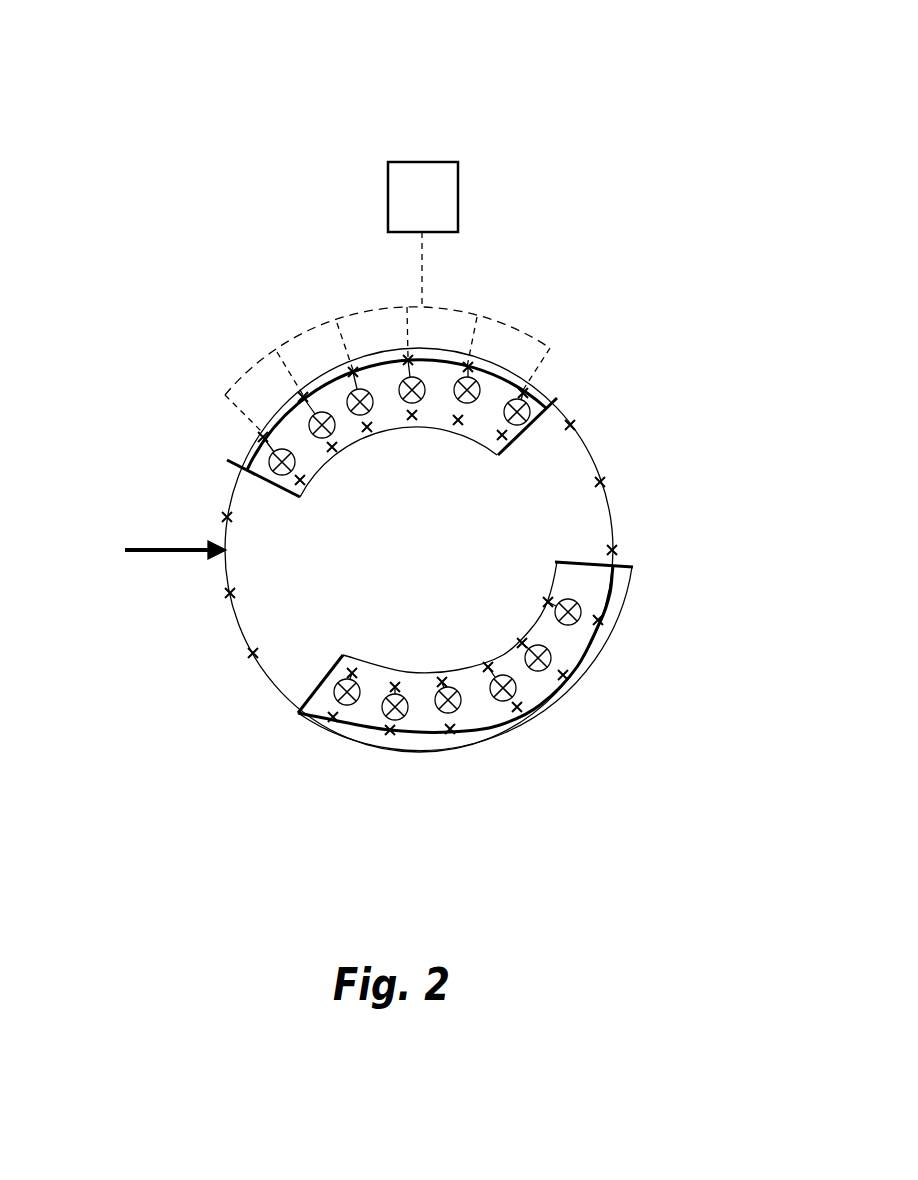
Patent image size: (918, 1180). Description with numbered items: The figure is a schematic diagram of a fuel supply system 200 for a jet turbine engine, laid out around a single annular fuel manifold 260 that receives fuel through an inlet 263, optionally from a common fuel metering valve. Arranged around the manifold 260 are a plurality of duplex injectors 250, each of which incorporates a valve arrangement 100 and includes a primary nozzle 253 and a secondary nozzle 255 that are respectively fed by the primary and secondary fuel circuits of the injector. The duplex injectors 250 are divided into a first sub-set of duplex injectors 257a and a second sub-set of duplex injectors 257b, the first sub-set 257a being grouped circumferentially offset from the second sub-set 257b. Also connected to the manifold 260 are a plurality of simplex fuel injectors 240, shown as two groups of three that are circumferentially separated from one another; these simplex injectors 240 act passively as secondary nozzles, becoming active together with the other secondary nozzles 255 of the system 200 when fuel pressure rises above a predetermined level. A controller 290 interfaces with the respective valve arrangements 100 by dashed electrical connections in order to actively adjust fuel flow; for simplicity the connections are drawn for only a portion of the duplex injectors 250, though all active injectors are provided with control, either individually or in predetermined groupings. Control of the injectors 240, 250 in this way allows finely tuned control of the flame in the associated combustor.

The fuel supply system 200 is at (148, 194).
The controller 290 is at (438, 162).
The duplex injector 250 is at (490, 354).
The fuel manifold 260 is at (237, 485).
The inlet 263 is at (156, 546).
The simplex fuel injector 240 is at (212, 601).
The valve arrangement 100 is at (366, 406).
The primary nozzle 253 is at (497, 457).
The first sub-set of duplex injectors 257a is at (300, 494).
The second sub-set of duplex injectors 257b is at (328, 672).
The secondary nozzle 255 is at (502, 733).